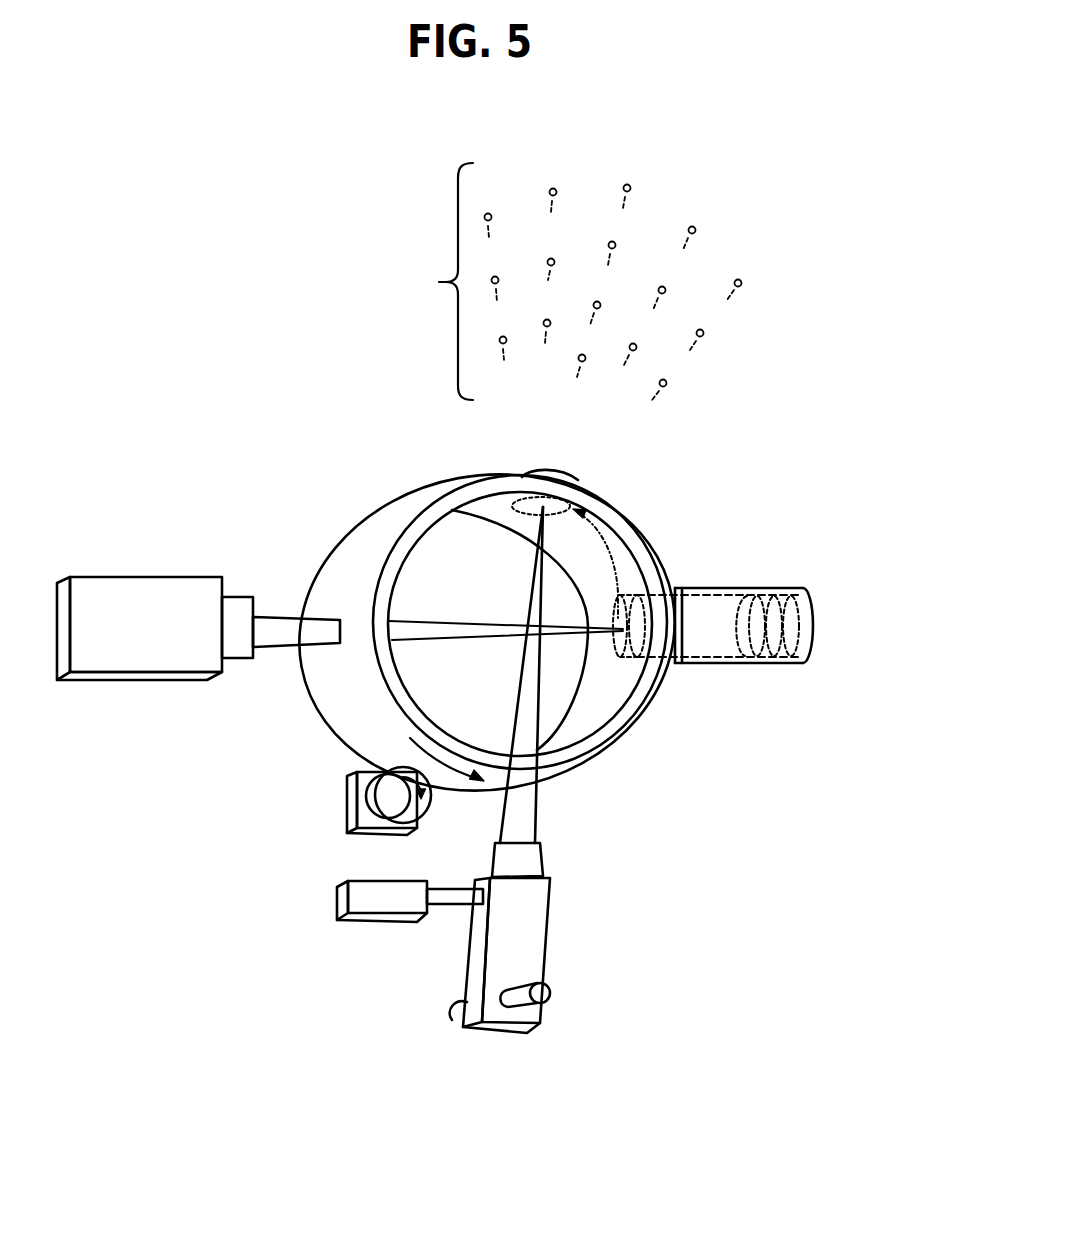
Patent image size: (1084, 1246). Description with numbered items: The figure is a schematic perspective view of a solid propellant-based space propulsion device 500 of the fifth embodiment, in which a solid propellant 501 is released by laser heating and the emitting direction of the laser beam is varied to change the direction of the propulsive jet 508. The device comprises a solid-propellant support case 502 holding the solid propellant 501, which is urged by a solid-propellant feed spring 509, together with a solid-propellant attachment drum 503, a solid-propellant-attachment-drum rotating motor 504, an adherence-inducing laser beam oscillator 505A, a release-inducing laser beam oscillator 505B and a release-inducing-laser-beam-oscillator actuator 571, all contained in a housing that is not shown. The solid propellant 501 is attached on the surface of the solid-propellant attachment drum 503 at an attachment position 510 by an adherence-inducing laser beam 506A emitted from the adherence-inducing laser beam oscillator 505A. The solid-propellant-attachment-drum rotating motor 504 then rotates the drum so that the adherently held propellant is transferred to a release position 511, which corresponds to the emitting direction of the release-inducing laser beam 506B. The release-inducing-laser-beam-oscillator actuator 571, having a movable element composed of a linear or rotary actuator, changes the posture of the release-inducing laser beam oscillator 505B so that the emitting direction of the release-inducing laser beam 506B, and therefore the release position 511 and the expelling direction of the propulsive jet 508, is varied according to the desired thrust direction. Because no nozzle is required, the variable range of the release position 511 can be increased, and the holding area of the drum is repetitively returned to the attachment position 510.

The solid propellant-based space propulsion device 500 is at (828, 185).
The propulsive jet 508 is at (426, 276).
The solid-propellant attachment drum 503 is at (390, 505).
The release position 511 is at (582, 500).
The attachment position 510 is at (638, 613).
The solid propellant 501 is at (724, 592).
The solid-propellant support case 502 is at (787, 588).
The solid-propellant feed spring 509 is at (797, 622).
The adherence-inducing laser beam oscillator 505A is at (163, 577).
The adherence-inducing laser beam 506A is at (293, 617).
The solid-propellant-attachment-drum rotating motor 504 is at (386, 822).
The release-inducing-laser-beam-oscillator actuator 571 is at (383, 917).
The release-inducing laser beam oscillator 505B is at (504, 1028).
The release-inducing laser beam 506B is at (545, 818).